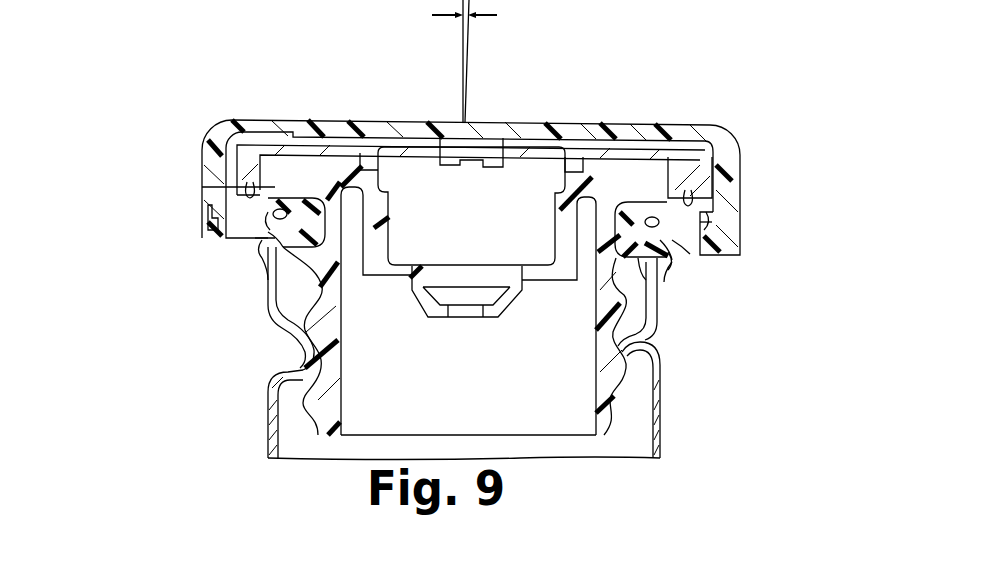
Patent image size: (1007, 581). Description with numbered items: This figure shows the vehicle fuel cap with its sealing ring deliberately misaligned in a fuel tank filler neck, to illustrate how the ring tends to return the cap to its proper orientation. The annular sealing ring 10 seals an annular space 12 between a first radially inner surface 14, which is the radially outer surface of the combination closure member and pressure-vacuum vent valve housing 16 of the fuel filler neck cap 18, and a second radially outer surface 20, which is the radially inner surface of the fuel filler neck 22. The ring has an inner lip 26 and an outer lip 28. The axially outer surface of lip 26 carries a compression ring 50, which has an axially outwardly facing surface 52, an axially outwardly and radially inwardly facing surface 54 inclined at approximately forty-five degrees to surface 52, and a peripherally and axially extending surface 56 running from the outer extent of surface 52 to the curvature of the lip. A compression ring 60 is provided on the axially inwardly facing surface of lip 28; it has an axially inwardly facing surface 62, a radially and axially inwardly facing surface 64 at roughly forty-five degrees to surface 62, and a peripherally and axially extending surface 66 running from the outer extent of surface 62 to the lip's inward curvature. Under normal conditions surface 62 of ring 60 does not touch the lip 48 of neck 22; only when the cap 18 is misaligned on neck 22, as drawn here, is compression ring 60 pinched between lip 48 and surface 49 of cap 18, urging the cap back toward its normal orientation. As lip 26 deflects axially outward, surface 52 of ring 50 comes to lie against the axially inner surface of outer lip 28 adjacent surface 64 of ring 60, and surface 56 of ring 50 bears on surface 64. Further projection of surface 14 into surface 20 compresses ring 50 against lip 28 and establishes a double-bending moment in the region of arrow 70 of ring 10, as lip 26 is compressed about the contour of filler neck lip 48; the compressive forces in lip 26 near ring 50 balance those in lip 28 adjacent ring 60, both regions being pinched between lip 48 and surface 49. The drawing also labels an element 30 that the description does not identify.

The annular sealing ring 10 is at (226, 250).
The annular space 12 is at (303, 406).
The first radially inner surface 14 is at (333, 280).
The combination closure member and pressure-vacuum vent valve housing 16 is at (449, 400).
The fuel filler neck cap 18 is at (450, 124).
The second radially outer surface 20 is at (288, 332).
The fuel filler neck 22 is at (663, 408).
The inner lip 26 is at (330, 290).
The outer lip 28 is at (304, 207).
The plug body 30 is at (315, 228).
The filler neck lip 48 is at (265, 212).
The cap surface 49 is at (250, 186).
The compression ring 50 is at (268, 237).
The axially outwardly facing surface 52 is at (270, 268).
The axially outwardly and radially inwardly facing surface 54 is at (300, 212).
The peripherally and axially extending surface 56 is at (266, 247).
The compression ring 60 is at (272, 205).
The axially inwardly facing surface 62 is at (278, 208).
The radially and axially inwardly facing surface 64 is at (293, 210).
The peripherally and axially extending surface 66 is at (268, 210).
The arrow 70 is at (660, 240).